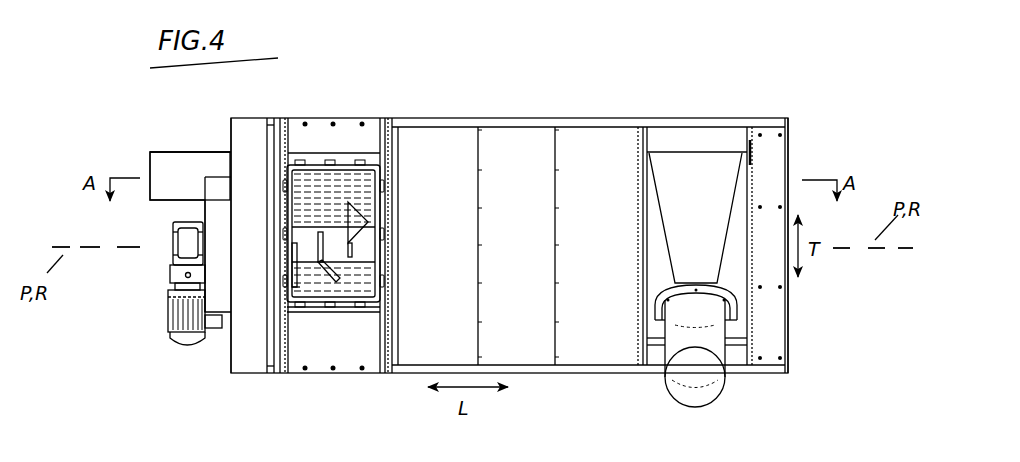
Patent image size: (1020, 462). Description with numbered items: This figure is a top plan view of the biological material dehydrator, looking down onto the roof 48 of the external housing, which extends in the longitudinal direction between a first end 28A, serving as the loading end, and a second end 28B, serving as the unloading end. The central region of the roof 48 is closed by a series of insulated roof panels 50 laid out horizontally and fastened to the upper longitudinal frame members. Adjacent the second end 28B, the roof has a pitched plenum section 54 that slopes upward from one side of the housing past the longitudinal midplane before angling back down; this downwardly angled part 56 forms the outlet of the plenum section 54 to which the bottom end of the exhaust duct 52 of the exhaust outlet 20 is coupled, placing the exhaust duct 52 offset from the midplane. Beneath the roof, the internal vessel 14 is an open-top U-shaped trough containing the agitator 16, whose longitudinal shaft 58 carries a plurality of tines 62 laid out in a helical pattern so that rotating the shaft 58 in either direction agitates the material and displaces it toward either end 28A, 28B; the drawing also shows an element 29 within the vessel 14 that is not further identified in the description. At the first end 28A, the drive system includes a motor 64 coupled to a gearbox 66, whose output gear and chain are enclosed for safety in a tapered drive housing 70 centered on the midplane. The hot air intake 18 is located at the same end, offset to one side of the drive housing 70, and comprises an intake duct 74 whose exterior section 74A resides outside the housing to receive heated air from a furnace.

The internal vessel 14 is at (357, 185).
The agitator 16 is at (364, 212).
The hot air intake 18 is at (146, 154).
The exhaust outlet 20 is at (664, 398).
The first end 28A is at (143, 328).
The second end 28B is at (806, 163).
The filter media 29 is at (337, 187).
The roof 48 is at (531, 146).
The insulated roof panels 50 is at (447, 313).
The exhaust duct 52 is at (712, 337).
The pitched plenum section 54 is at (684, 182).
The downwardly angled part 56 is at (652, 327).
The longitudinal shaft 58 is at (367, 250).
The tines 62 is at (365, 222).
The motor 64 is at (170, 308).
The gearbox 66 is at (185, 245).
The drive housing 70 is at (212, 197).
The intake duct 74 is at (168, 168).
The exterior section 74A is at (195, 155).